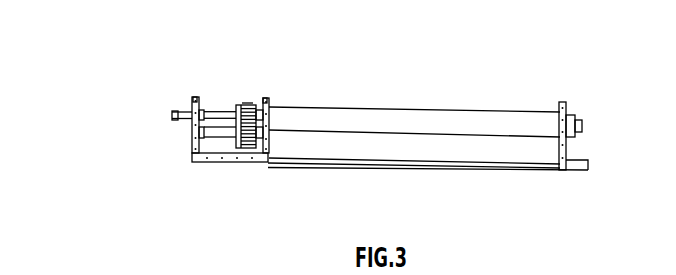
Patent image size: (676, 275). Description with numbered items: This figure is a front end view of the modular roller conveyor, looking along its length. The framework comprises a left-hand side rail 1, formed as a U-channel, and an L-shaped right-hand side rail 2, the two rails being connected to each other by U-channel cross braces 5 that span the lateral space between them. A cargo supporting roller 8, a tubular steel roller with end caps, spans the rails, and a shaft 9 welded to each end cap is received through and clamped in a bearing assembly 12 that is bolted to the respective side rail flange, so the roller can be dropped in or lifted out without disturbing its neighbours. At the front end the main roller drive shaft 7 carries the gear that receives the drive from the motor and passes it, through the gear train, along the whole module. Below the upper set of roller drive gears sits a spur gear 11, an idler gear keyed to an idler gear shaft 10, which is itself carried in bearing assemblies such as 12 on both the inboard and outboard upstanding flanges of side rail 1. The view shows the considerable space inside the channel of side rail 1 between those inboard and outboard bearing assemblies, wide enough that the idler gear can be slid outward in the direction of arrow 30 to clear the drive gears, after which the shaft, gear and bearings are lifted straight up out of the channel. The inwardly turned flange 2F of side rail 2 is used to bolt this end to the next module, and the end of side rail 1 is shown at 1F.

The left-hand side rail 1 is at (157, 147).
The first frame bracket 1F is at (193, 158).
The right-hand side rail 2 is at (600, 146).
The inwardly turned flange 2F is at (588, 168).
The U-channel cross brace 5 is at (431, 172).
The main roller drive shaft 7 is at (173, 112).
The cargo supporting roller 8 is at (387, 108).
The shaft 9 is at (579, 123).
The idler gear shaft 10 is at (220, 142).
The spur gear 11 is at (248, 103).
The bearing assembly 12 is at (203, 98).
The arrow 30 is at (38, 130).